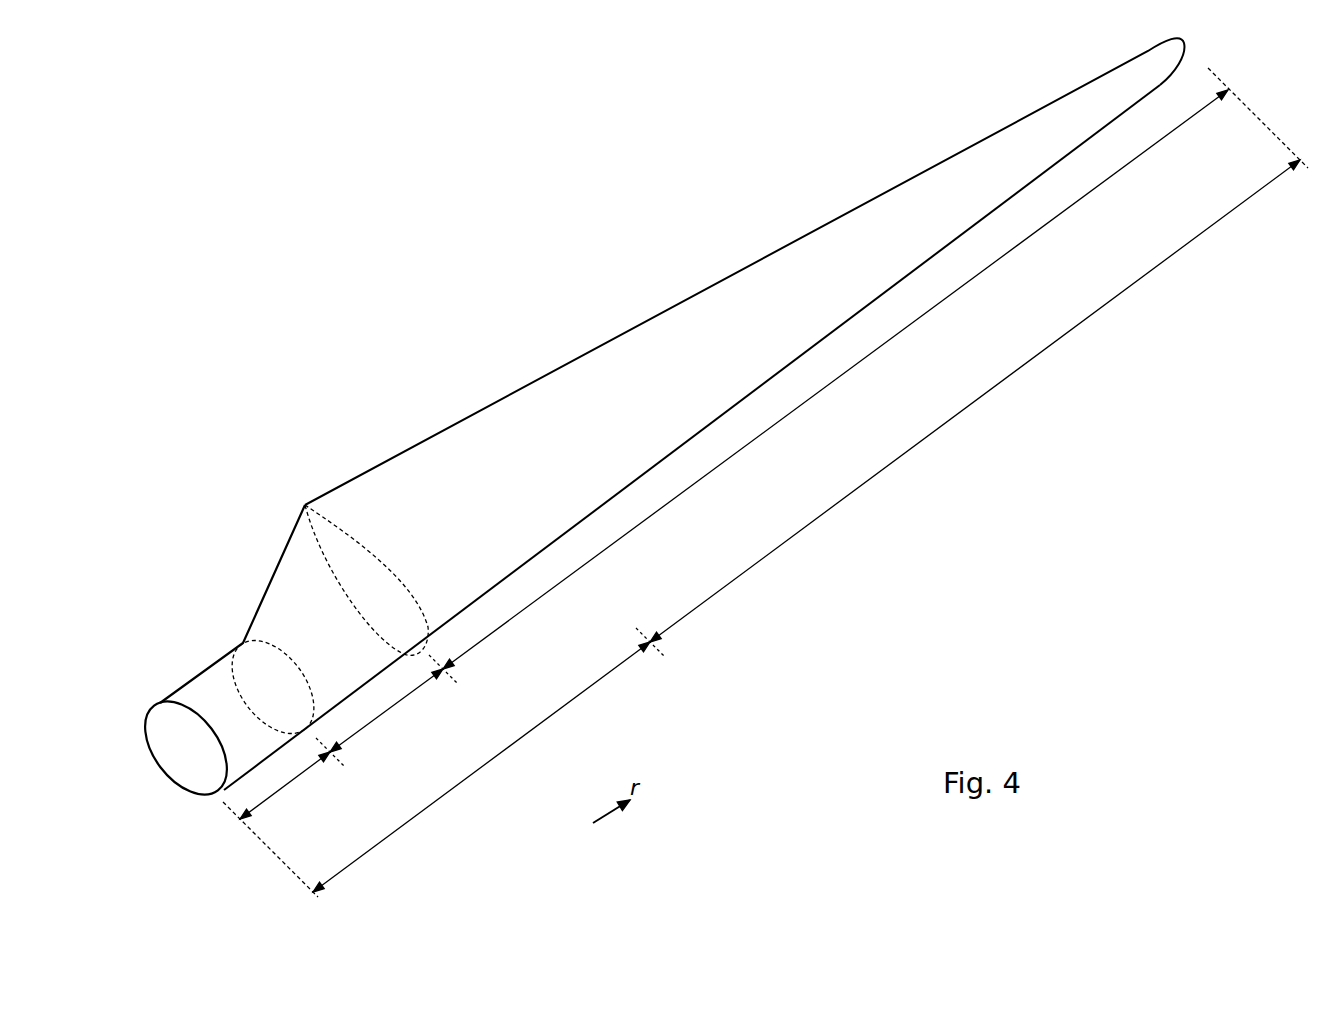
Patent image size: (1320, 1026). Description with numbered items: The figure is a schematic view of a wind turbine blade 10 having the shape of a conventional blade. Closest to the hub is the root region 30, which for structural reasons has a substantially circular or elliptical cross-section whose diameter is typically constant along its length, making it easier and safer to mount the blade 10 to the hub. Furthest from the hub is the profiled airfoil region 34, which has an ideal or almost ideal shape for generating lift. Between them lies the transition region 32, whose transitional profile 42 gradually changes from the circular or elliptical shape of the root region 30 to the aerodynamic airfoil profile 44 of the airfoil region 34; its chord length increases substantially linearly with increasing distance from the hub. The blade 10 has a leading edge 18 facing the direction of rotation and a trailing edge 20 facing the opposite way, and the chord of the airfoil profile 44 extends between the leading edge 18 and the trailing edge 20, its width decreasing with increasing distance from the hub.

The wind turbine blade 10 is at (480, 276).
The leading edge 18 is at (870, 302).
The trailing edge 20 is at (878, 196).
The root region 30 is at (290, 782).
The transition region 32 is at (390, 708).
The airfoil region 34 is at (757, 437).
The transitional profile 42 is at (517, 741).
The airfoil profile 44 is at (792, 537).